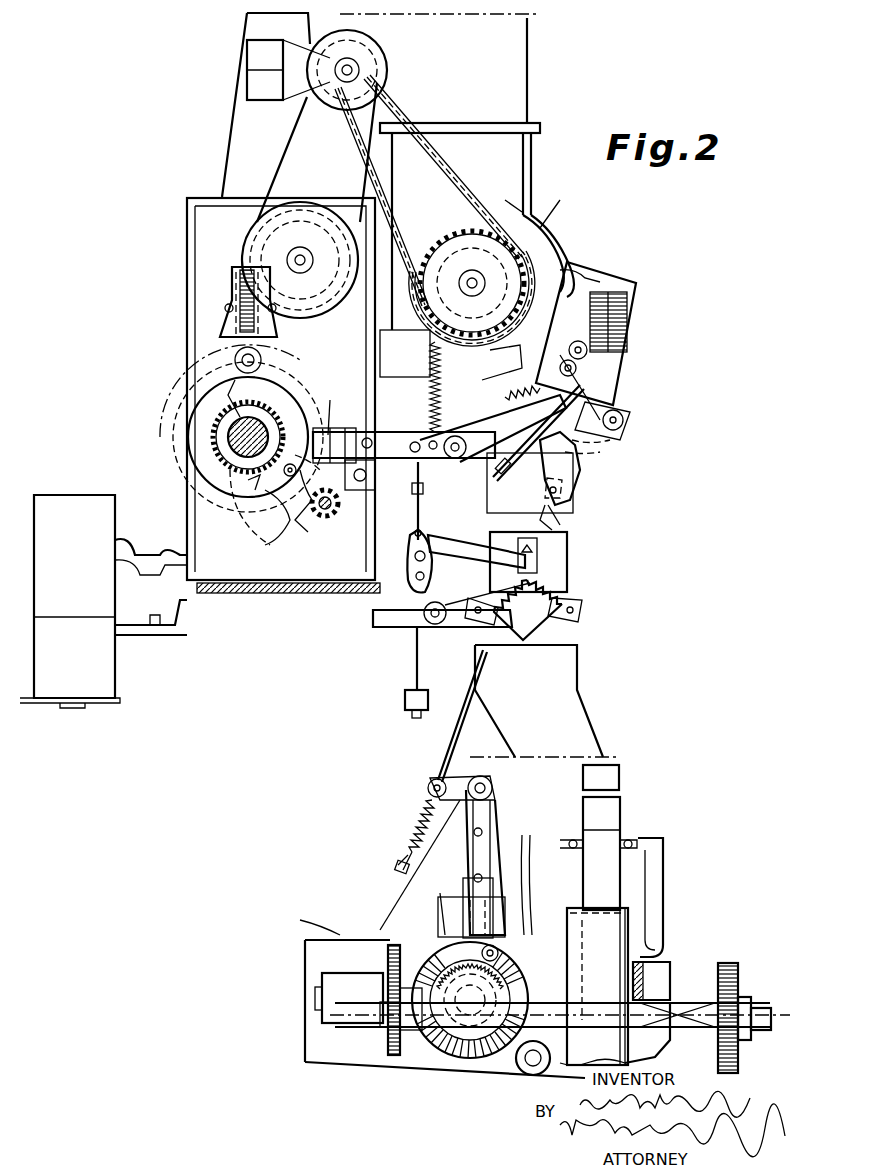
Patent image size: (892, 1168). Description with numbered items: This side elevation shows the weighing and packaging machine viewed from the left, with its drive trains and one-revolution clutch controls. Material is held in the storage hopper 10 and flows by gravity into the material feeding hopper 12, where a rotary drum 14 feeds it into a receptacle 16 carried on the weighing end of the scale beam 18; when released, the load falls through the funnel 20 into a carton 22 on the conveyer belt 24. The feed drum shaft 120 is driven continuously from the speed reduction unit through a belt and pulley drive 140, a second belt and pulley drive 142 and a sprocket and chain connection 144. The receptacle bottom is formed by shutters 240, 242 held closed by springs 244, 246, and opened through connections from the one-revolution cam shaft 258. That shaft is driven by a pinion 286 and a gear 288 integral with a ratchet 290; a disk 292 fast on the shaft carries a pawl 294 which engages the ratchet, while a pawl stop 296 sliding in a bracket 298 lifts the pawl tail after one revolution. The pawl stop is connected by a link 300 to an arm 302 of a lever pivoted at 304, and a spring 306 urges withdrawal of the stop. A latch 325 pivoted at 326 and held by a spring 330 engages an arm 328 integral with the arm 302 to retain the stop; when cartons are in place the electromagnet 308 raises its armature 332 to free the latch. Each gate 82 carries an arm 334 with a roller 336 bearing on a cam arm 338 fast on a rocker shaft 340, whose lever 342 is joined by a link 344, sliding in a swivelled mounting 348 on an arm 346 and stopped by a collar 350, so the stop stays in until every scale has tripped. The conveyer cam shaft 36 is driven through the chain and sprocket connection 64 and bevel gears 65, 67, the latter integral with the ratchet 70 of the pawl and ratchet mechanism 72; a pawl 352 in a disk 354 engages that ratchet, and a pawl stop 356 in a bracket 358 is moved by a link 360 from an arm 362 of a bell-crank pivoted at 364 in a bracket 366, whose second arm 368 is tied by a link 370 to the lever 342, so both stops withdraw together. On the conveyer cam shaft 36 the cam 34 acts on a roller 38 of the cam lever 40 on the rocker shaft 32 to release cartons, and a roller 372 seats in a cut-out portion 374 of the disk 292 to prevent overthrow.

The storage hopper 10 is at (510, 58).
The material feeding hopper 12 is at (574, 232).
The rotary drum 14 is at (545, 225).
The receptacle 16 is at (568, 578).
The scale beam 18 is at (452, 545).
The funnel 20 is at (592, 735).
The carton 22 is at (610, 815).
The conveyer belt 24 is at (650, 900).
The rocker shaft 32 is at (530, 1065).
The cam 34 is at (430, 1055).
The cam shaft 36 is at (430, 1050).
The roller 38 is at (450, 1058).
The cam lever 40 is at (505, 1060).
The chain and sprocket connection 64 is at (385, 1060).
The bevel gear 65 is at (522, 870).
The bevel gear 67 is at (385, 957).
The ratchet 70 is at (458, 935).
The pawl and ratchet driving mechanism 72 is at (450, 920).
The gate 82 is at (570, 498).
The feed drum shaft 120 is at (470, 272).
The belt and pulley drive 140 is at (345, 320).
The second belt and pulley drive 142 is at (270, 163).
The sprocket and chain connection 144 is at (450, 168).
The shutter 240 is at (450, 655).
The shutter 242 is at (530, 632).
The spring 244 is at (570, 602).
The spring 246 is at (490, 582).
The cam shaft 258 is at (230, 430).
The pinion 286 is at (318, 520).
The gear 288 is at (255, 540).
The ratchet 290 is at (210, 462).
The disk 292 is at (225, 400).
The pawl 294 is at (290, 385).
The pawl stop 296 is at (325, 370).
The bracket 298 is at (395, 415).
The link 300 is at (395, 425).
The arm 302 is at (447, 410).
The pivot 304 is at (458, 436).
The spring 306 is at (308, 395).
The electromagnet 308 is at (625, 300).
The latch 325 is at (508, 345).
The pivot 326 is at (585, 270).
The arm 328 is at (510, 395).
The spring 330 is at (578, 375).
The armature 332 is at (590, 352).
The arm 334 is at (580, 470).
The roller 336 is at (600, 452).
The cam arm 338 is at (615, 440).
The rocker shaft 340 is at (630, 414).
The lever 342 is at (560, 392).
The link 344 is at (555, 525).
The arm 346 is at (428, 492).
The swivelled mounting 348 is at (560, 528).
The collar 350 is at (529, 483).
The pawl 352 is at (440, 905).
The disk 354 is at (306, 917).
The pawl stop 356 is at (445, 880).
The bracket 358 is at (440, 850).
The link 360 is at (425, 830).
The arm 362 is at (495, 805).
The pivot 364 is at (482, 775).
The bracket 366 is at (430, 790).
The arm 368 is at (458, 770).
The link 370 is at (585, 392).
The roller 372 is at (220, 320).
The cut-out portion 374 is at (235, 360).